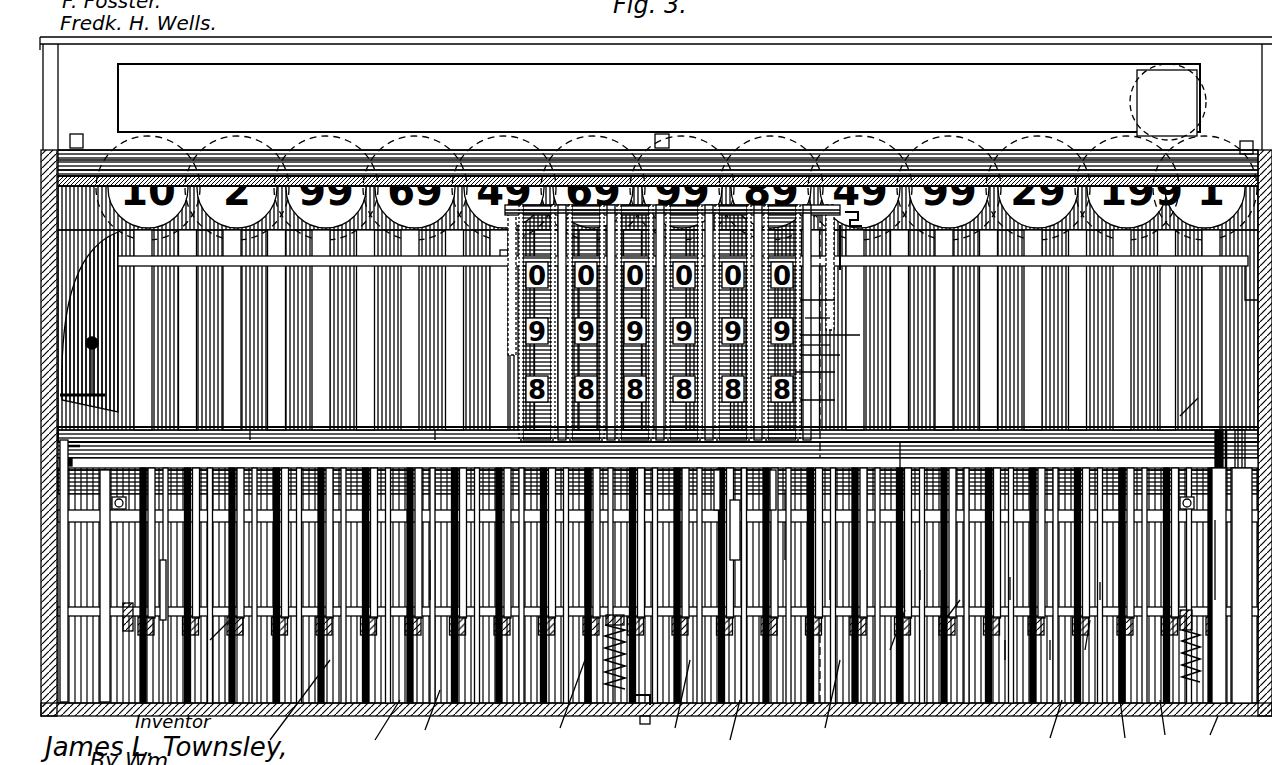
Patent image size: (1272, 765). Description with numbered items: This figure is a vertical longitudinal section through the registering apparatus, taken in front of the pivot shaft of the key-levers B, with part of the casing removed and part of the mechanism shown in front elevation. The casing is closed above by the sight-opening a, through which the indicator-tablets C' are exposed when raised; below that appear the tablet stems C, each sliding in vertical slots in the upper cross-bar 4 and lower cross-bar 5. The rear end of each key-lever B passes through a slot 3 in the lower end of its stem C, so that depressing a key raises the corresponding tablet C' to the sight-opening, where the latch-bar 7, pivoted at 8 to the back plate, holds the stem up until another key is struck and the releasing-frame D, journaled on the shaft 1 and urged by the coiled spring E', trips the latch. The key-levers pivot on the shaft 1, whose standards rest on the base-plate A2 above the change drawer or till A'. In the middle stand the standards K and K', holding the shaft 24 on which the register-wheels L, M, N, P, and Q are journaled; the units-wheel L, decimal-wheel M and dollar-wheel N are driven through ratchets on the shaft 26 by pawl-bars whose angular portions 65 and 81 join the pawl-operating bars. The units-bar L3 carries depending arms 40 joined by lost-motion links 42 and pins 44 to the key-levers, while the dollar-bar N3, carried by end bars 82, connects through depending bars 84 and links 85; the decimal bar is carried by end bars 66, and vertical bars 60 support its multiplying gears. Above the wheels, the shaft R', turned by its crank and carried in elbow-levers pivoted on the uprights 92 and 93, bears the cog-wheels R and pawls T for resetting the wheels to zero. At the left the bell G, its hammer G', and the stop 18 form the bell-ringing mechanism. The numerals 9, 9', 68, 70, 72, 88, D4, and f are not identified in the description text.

The sight-opening a is at (659, 98).
The shaft 1 is at (1168, 102).
The indicator-tablet C' is at (676, 185).
The stem C is at (658, 330).
The bell or gong G is at (90, 322).
The hammer G' is at (95, 334).
The rod 9 is at (101, 372).
The stop 18 is at (60, 398).
The upright 93 is at (500, 262).
The shaft R' is at (676, 233).
The registering-wheel Q is at (591, 322).
The registering-wheel P is at (591, 322).
The dollar-wheel N is at (689, 322).
The decimal-wheel M is at (738, 322).
The units-wheel L is at (787, 322).
The cog-wheel R is at (664, 209).
The pawl T is at (672, 207).
The upright 92 is at (843, 262).
The standard K is at (830, 341).
The shaft 24 is at (836, 339).
The standard K' is at (842, 351).
The vertical bar 60 is at (840, 367).
The cross-bar 4 is at (1192, 316).
The pawl-operating bar N3 is at (658, 449).
The shaft 26 is at (905, 440).
The pawl-operating bar L3 is at (1214, 437).
The end bar 66 is at (634, 440).
The block 72 is at (410, 514).
The end bar 82 is at (1244, 444).
The keys 68 is at (658, 507).
The arm 40 is at (687, 581).
The rod 9' is at (48, 571).
The pivot 8 is at (112, 500).
The depending bar 84 is at (185, 586).
The lost-motion connection 85 is at (175, 573).
The releasing-frame D is at (122, 612).
The spring D4 is at (625, 700).
The coiled spring E' is at (1214, 613).
The pin f is at (642, 719).
The pin 44 is at (741, 603).
The bar 88 is at (739, 531).
The bar 70 is at (763, 646).
The lost-motion link 42 is at (732, 662).
The key-lever B is at (584, 672).
The cross-bar 5 is at (1214, 565).
The change drawer or till A' is at (1089, 646).
The base-plate A2 is at (1220, 729).
The slot 3 is at (1106, 724).
The angular portion 81 is at (722, 484).
The outer portion 65 is at (778, 484).
The latch-bar 7 is at (348, 425).